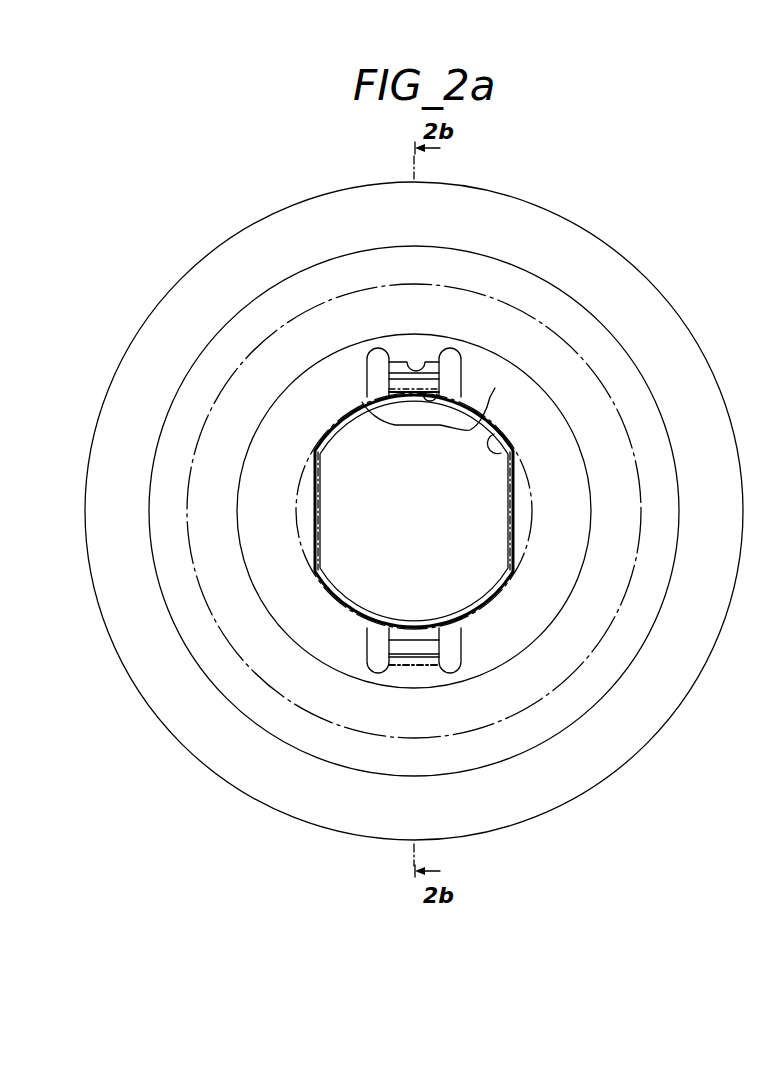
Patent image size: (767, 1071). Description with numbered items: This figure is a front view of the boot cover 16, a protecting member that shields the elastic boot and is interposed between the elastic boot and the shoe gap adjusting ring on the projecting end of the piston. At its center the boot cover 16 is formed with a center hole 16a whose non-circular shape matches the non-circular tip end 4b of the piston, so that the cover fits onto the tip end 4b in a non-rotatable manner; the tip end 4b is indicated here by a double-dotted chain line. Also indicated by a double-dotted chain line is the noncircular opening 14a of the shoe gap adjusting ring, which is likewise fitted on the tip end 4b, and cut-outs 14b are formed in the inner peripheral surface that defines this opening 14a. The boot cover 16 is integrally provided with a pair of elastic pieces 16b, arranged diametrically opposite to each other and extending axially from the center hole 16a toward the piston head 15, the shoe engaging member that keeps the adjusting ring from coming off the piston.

The boot cover 16 is at (626, 252).
The center hole 16a is at (362, 402).
The elastic pieces 16b is at (460, 395).
The noncircular opening 14a is at (510, 436).
The cut-outs 14b is at (424, 362).
The non-circular tip end 4b is at (510, 500).
The piston head 15 is at (527, 555).